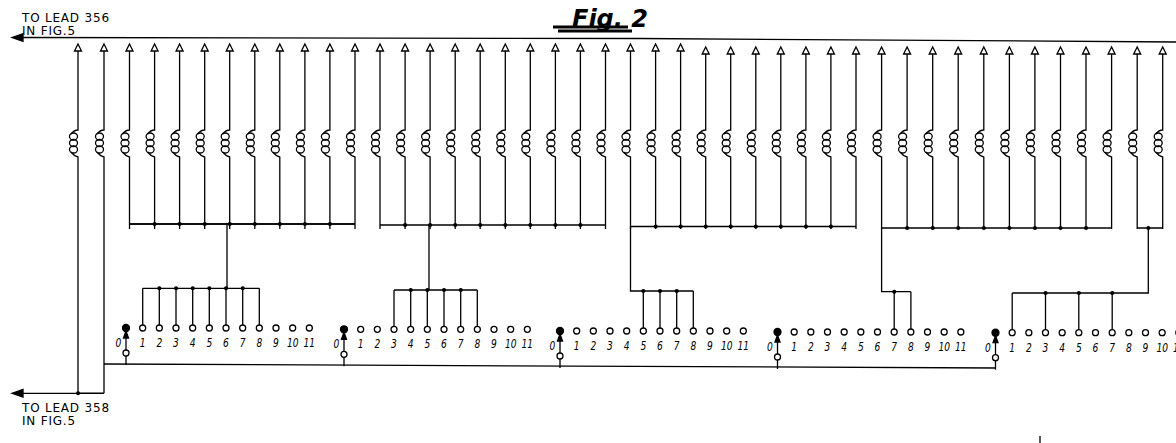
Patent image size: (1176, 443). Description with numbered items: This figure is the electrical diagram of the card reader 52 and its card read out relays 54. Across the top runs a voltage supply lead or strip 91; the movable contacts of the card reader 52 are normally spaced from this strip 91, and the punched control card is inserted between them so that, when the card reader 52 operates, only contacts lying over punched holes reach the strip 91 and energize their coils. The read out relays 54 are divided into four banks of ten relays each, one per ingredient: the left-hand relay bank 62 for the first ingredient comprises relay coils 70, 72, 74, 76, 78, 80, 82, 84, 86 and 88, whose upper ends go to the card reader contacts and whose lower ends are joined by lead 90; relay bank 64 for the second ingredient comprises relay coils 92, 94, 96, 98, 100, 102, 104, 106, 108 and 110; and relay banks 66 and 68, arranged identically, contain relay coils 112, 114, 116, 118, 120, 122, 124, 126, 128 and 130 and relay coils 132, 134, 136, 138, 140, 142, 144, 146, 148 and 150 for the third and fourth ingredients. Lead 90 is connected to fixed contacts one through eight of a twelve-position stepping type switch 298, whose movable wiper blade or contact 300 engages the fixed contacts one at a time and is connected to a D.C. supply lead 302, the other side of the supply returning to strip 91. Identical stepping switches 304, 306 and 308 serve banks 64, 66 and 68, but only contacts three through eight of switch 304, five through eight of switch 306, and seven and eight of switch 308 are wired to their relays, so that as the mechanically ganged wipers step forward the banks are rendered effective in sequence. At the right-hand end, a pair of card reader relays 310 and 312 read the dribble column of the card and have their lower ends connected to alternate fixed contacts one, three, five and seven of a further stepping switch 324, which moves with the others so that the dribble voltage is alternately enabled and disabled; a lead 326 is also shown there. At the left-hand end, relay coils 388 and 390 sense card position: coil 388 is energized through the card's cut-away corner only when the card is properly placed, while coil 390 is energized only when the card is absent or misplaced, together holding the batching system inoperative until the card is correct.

The card reader 52 is at (73, 43).
The card read out relays 54 is at (72, 188).
The relay bank 62 is at (270, 229).
The relay bank 64 is at (523, 229).
The relay bank 66 is at (739, 231).
The relay bank 68 is at (952, 232).
The relay coil 70 is at (132, 136).
The relay coil 72 is at (157, 136).
The relay coil 74 is at (182, 136).
The relay coil 76 is at (207, 136).
The relay coil 78 is at (232, 136).
The relay coil 80 is at (257, 136).
The relay coil 82 is at (282, 136).
The relay coil 84 is at (307, 136).
The relay coil 86 is at (332, 136).
The relay coil 88 is at (358, 136).
The lead 90 is at (195, 225).
The voltage supply lead or strip 91 is at (347, 38).
The relay coil 92 is at (383, 136).
The relay coil 94 is at (408, 136).
The relay coil 96 is at (433, 136).
The relay coil 98 is at (458, 136).
The relay coil 100 is at (486, 136).
The relay coil 102 is at (511, 136).
The relay coil 104 is at (536, 136).
The relay coil 106 is at (561, 136).
The relay coil 108 is at (586, 136).
The relay coil 110 is at (611, 136).
The relay coil 112 is at (636, 136).
The relay coil 114 is at (661, 136).
The relay coil 116 is at (686, 136).
The relay coil 118 is at (711, 138).
The relay coil 120 is at (736, 138).
The relay coil 122 is at (761, 138).
The relay coil 124 is at (786, 138).
The relay coil 126 is at (811, 138).
The relay coil 128 is at (836, 138).
The relay coil 130 is at (862, 138).
The relay coil 132 is at (887, 138).
The relay coil 134 is at (913, 138).
The relay coil 136 is at (938, 138).
The relay coil 138 is at (964, 138).
The relay coil 140 is at (989, 138).
The relay coil 142 is at (1015, 138).
The relay coil 144 is at (1040, 138).
The relay coil 146 is at (1066, 138).
The relay coil 148 is at (1092, 138).
The relay coil 150 is at (1117, 138).
The stepping type switch 298 is at (136, 321).
The movable wiper blade or contact 300 is at (130, 354).
The D.C. supply lead 302 is at (42, 385).
The stepping switch 304 is at (388, 317).
The stepping switch 306 is at (638, 318).
The stepping switch 308 is at (888, 323).
The card reader relay 310 is at (1144, 138).
The card reader relay 312 is at (1153, 138).
The stepping switch 324 is at (1008, 323).
The lead 326 is at (1050, 438).
The relay coil 388 is at (70, 140).
The relay coil 390 is at (95, 151).